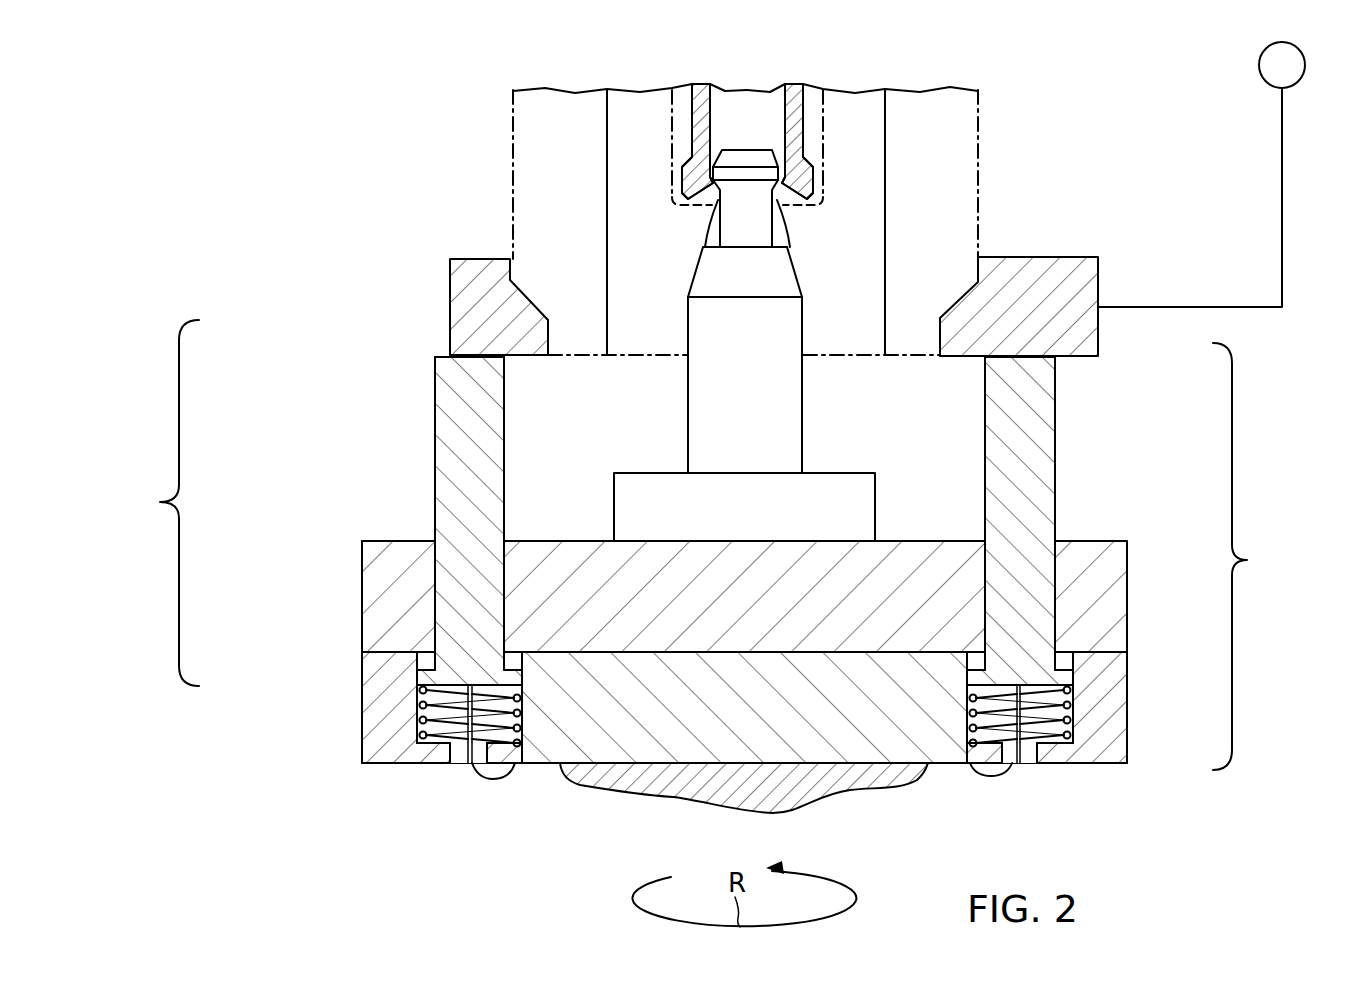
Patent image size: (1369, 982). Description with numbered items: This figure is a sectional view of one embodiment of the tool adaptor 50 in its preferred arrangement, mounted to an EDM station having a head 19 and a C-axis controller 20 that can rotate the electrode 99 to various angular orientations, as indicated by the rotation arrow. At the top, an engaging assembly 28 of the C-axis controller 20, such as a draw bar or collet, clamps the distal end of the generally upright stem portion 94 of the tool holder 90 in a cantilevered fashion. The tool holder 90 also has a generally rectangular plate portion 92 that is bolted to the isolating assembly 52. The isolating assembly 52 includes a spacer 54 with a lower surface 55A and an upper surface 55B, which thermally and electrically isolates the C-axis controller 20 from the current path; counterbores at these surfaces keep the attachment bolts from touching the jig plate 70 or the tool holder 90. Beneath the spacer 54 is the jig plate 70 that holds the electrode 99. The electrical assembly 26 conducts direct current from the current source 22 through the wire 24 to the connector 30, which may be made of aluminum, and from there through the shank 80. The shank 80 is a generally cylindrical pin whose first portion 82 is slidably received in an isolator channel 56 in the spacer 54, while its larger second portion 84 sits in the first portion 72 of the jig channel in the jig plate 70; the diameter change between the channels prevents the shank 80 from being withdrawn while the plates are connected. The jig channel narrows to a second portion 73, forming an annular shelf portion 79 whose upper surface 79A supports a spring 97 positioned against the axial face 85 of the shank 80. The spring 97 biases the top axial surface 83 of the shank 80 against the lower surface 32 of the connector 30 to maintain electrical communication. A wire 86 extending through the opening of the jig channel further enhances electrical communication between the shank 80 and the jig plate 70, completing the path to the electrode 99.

The head 19 is at (541, 182).
The C-axis controller 20 is at (872, 223).
The current source 22 is at (1293, 85).
The wire 24 is at (1282, 193).
The electrical assembly 26 is at (159, 503).
The engaging assembly 28 is at (836, 172).
The connector 30 is at (455, 300).
The lower surface of the connector 32 is at (517, 358).
The tool adaptor 50 is at (1251, 556).
The isolating assembly 52 is at (324, 588).
The spacer 54 is at (1120, 572).
The lower surface of the spacer 55A is at (792, 656).
The upper surface of the spacer 55B is at (900, 538).
The isolator channel 56 is at (436, 598).
The jig plate 70 is at (372, 723).
The first portion of the jig channel 72 is at (1073, 712).
The second portion of the jig channel 73 is at (1038, 755).
The shelf portion 79 is at (438, 756).
The upper surface of the shelf portion 79A is at (437, 732).
The shank 80 is at (1073, 509).
The first portion of the shank 82 is at (1047, 457).
The axial surface of the shank 83 is at (1040, 340).
The second portion of the shank 84 is at (1065, 673).
The axial face of the shank 85 is at (428, 707).
The wire 86 is at (1010, 773).
The tool holder 90 is at (842, 438).
The plate portion 92 is at (618, 495).
The stem portion 94 is at (707, 270).
The spring 97 is at (515, 745).
The electrode 99 is at (617, 795).